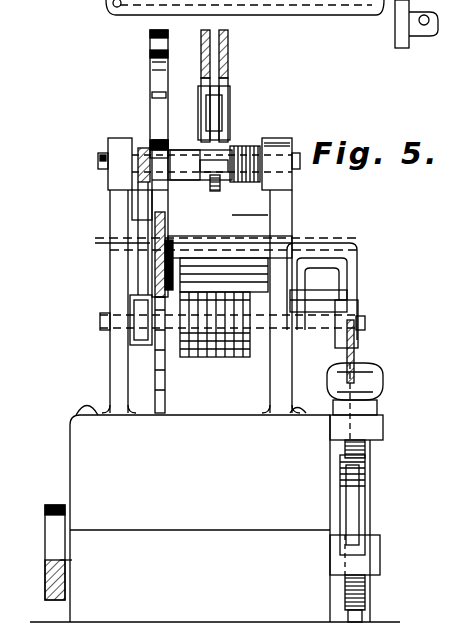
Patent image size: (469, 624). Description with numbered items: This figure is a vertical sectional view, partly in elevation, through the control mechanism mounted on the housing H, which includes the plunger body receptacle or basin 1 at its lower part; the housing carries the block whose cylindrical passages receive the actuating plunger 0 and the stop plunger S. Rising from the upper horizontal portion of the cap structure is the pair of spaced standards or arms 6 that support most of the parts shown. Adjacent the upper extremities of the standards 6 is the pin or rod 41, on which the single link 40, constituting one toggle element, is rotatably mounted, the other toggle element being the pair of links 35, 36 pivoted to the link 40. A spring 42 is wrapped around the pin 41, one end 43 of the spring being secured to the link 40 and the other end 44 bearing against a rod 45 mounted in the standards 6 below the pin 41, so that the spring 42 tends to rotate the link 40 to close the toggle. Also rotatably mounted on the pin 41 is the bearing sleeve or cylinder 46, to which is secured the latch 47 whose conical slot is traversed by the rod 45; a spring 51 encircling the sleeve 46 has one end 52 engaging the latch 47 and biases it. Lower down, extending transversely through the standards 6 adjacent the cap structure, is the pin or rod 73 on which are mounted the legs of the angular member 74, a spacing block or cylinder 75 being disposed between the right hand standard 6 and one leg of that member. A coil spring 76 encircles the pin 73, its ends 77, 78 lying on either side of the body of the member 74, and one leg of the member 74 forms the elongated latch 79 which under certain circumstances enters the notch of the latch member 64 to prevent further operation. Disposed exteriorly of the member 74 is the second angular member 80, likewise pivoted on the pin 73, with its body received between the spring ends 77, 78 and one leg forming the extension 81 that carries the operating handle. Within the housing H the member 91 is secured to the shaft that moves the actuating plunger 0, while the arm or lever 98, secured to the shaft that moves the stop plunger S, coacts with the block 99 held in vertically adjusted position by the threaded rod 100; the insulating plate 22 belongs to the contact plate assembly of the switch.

The housing H is at (108, 6).
The stop plunger S is at (108, 17).
The plunger body receptacle or basin 1 is at (296, 15).
The top plate end 0 is at (337, 4).
The latch 47 is at (150, 72).
The end of spring 52 is at (150, 93).
The spring 51 is at (135, 150).
The link 35 is at (201, 52).
The link 36 is at (228, 55).
The end of spring 43 is at (228, 95).
The spring 42 is at (240, 146).
The bearing sleeve or cylinder 46 is at (172, 160).
The pin or rod 41 is at (104, 166).
The link 40 is at (214, 190).
The end of spring 44 is at (258, 216).
The standards or arms 6 is at (112, 216).
The end of coil spring 77 is at (172, 240).
The rod 45 is at (155, 214).
The arm or latch member 64 is at (155, 236).
The pin or rod 73 is at (102, 322).
The elongated latch 79 is at (168, 385).
The end of coil spring 78 is at (272, 250).
The coil spring 76 is at (215, 352).
The second angular member 80 is at (318, 243).
The angular member 74 is at (338, 252).
The spacing block or cylinder 75 is at (330, 310).
The extension 81 is at (356, 338).
The member 91 is at (50, 538).
The plate 22 is at (37, 563).
The arm or lever 98 is at (355, 500).
The block 99 is at (378, 548).
The threaded rod 100 is at (365, 452).